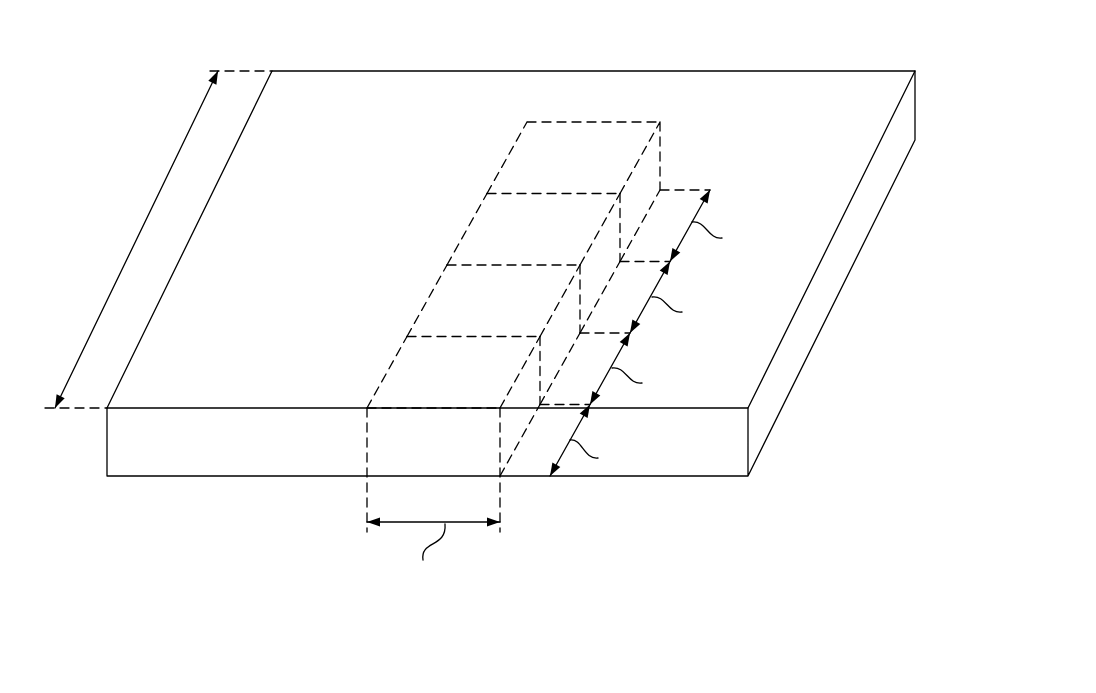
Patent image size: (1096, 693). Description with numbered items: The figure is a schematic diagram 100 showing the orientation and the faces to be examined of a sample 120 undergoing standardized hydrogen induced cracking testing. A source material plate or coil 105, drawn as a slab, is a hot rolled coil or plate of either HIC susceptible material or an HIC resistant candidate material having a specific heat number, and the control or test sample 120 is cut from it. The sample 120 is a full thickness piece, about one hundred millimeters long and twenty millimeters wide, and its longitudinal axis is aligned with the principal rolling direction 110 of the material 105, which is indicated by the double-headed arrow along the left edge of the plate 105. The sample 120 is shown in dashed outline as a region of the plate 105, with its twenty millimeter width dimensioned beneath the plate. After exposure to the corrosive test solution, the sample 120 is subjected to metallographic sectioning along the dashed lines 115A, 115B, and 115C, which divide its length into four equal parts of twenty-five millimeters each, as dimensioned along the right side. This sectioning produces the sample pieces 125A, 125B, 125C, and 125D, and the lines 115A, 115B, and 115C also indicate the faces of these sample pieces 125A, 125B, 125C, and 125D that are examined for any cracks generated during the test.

The schematic diagram 100 is at (268, 40).
The material 105 is at (792, 88).
The principal rolling direction 110 is at (149, 213).
The dashed-line 115A is at (452, 335).
The dashed-line 115B is at (468, 265).
The dashed-line 115C is at (510, 192).
The sample 120 is at (392, 449).
The sample piece 125A is at (423, 378).
The sample piece 125B is at (457, 300).
The sample piece 125C is at (493, 228).
The sample piece 125D is at (533, 158).